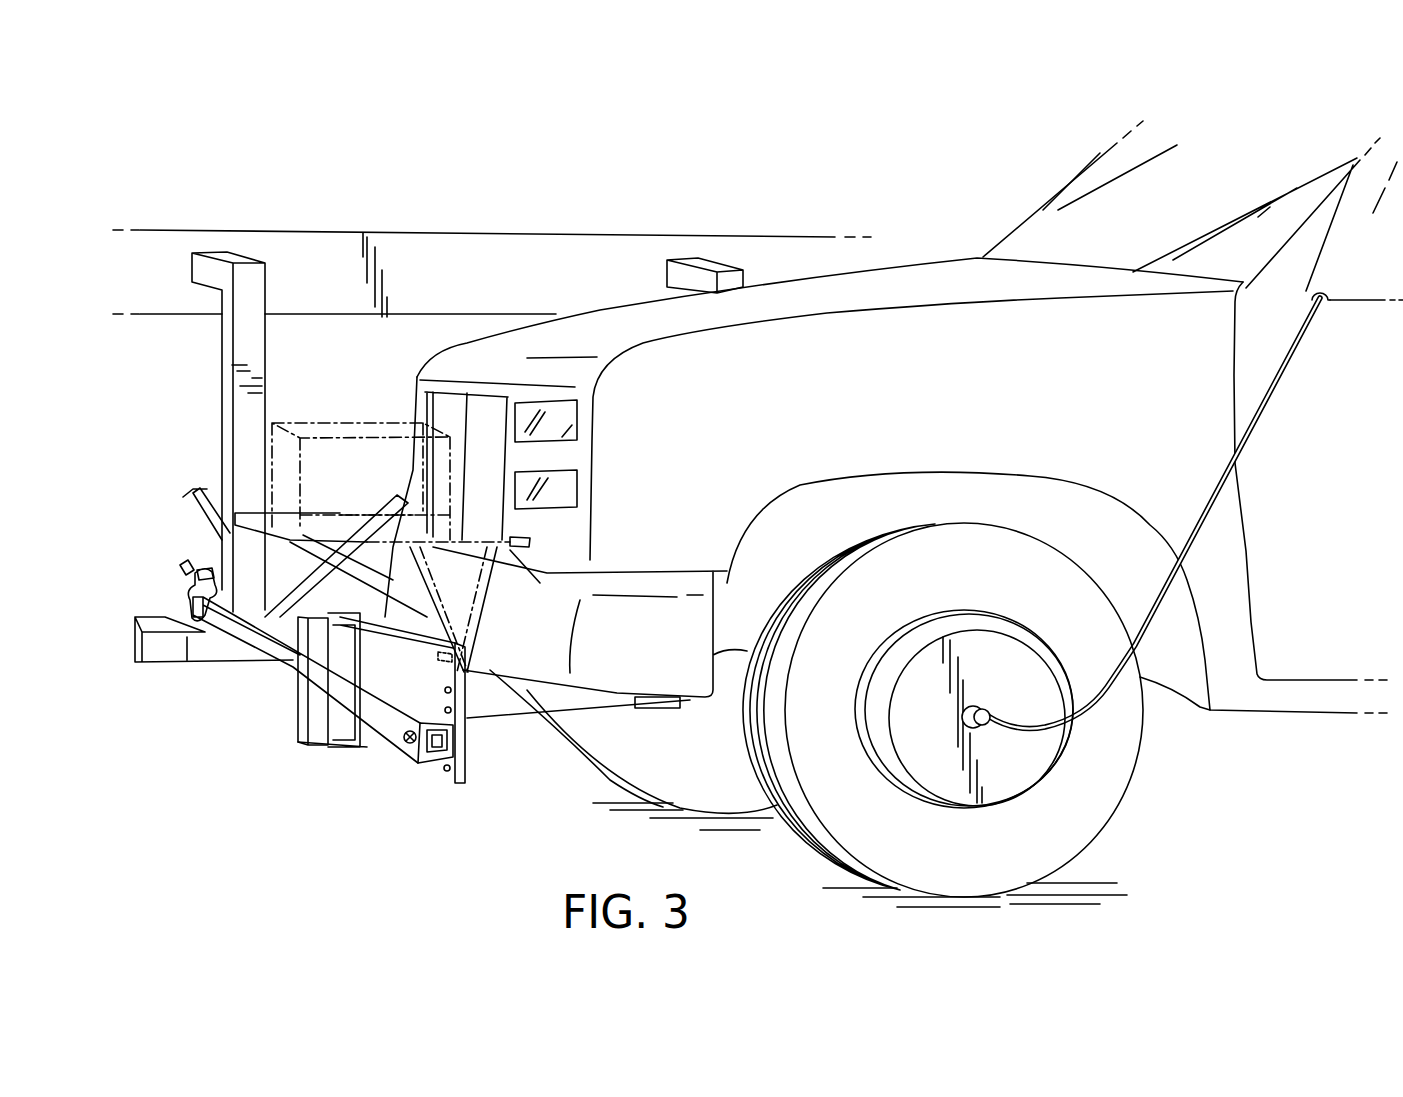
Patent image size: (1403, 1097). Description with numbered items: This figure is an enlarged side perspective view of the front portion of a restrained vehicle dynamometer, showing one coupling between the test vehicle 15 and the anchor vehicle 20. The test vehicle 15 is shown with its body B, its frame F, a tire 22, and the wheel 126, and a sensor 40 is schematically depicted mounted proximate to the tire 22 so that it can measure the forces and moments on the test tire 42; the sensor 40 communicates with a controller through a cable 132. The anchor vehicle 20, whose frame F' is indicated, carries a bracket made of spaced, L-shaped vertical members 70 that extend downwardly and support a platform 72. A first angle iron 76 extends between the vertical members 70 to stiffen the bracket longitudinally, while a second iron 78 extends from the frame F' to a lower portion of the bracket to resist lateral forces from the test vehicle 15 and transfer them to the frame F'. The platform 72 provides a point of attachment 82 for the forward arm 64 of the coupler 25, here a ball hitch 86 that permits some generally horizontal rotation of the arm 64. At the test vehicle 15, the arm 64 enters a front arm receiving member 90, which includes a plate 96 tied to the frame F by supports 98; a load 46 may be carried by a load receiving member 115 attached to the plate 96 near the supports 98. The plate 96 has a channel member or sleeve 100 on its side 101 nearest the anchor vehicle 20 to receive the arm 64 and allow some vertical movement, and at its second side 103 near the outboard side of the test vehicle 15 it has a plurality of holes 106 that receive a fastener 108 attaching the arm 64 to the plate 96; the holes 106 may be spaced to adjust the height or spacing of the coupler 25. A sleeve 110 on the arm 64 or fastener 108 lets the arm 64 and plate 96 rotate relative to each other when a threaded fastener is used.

The anchor vehicle 20 is at (165, 185).
The coupler 25 is at (165, 388).
The vertical members 70 is at (727, 275).
The load 46 is at (390, 427).
The first angle iron 76 is at (405, 493).
The second iron 78 is at (205, 495).
The point of attachment 82 is at (180, 562).
The ball hitch 86 is at (182, 572).
The platform 72 is at (150, 615).
The forward arm 64 is at (290, 663).
The sleeve 100 is at (318, 716).
The side of the plate 101 is at (362, 744).
The arm receiving member 90 is at (353, 758).
The plate 96 is at (373, 753).
The fastener 108 is at (408, 744).
The sleeve 110 is at (430, 752).
The second side of plate 103 is at (437, 748).
The holes 106 is at (449, 772).
The supports 98 is at (530, 722).
The load receiving member 115 is at (517, 538).
The wheel 126 is at (933, 603).
The sensor 40 is at (1013, 653).
The test tire 42 is at (1113, 785).
The tires 22 is at (673, 787).
The test vehicle 15 is at (1315, 747).
The cable 132 is at (1262, 422).
The body B is at (935, 270).
The frame F is at (657, 733).
The frame F' is at (492, 247).